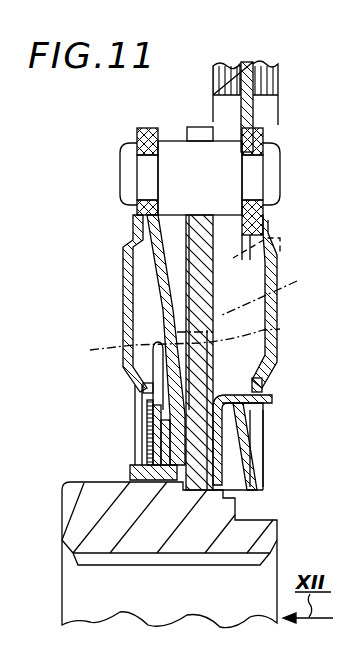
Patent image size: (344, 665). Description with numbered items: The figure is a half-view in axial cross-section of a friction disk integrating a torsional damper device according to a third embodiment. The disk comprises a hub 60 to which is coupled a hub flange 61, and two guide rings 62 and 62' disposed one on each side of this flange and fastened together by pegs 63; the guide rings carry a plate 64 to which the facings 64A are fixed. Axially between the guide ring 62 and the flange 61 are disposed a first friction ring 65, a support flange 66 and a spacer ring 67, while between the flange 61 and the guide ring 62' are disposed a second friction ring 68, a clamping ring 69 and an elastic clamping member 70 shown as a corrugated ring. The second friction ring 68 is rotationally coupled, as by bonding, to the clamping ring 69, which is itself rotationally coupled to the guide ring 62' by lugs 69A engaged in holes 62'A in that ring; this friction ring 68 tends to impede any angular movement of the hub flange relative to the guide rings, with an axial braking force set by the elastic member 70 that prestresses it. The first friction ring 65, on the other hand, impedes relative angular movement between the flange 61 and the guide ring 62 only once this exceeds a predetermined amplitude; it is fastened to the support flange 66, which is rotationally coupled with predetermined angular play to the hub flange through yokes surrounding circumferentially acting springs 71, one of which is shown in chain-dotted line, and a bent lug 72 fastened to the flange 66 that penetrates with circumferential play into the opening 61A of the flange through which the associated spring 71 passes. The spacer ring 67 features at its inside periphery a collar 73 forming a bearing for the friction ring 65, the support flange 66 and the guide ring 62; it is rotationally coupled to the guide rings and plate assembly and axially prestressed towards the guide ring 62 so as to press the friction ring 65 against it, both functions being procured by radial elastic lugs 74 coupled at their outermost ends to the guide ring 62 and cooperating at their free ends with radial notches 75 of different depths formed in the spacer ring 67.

The hub 60 is at (66, 517).
The hub flange 61 is at (210, 242).
The opening in the flange 61A is at (280, 329).
The guide ring 62 is at (171, 303).
The guide ring 62' is at (283, 275).
The holes in the guide ring 62'A is at (295, 370).
The pegs 63 is at (255, 172).
The plate 64 is at (253, 116).
The facings 64A is at (272, 68).
The first friction ring 65 is at (150, 443).
The support flange 66 is at (148, 422).
The spacer ring 67 is at (131, 478).
The second friction ring 68 is at (253, 490).
The clamping ring 69 is at (250, 462).
The lugs 69A is at (272, 397).
The elastic clamping member 70 is at (255, 423).
The circumferentially acting springs 71 is at (273, 287).
The bent lug 72 is at (118, 346).
The collar 73 is at (160, 465).
The radial elastic lugs 74 is at (152, 270).
The notches 75 is at (148, 388).